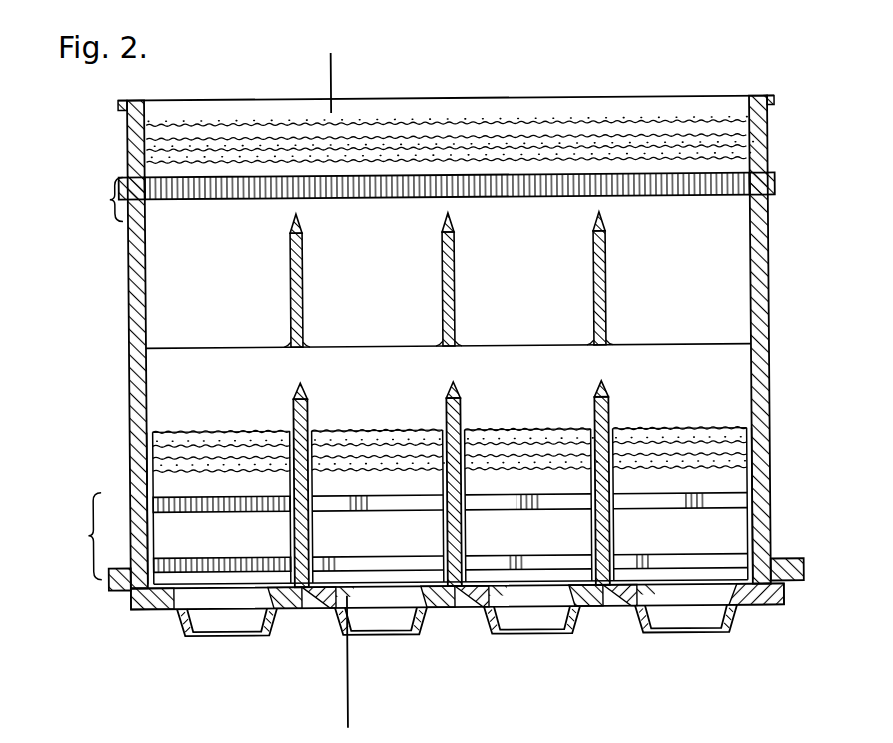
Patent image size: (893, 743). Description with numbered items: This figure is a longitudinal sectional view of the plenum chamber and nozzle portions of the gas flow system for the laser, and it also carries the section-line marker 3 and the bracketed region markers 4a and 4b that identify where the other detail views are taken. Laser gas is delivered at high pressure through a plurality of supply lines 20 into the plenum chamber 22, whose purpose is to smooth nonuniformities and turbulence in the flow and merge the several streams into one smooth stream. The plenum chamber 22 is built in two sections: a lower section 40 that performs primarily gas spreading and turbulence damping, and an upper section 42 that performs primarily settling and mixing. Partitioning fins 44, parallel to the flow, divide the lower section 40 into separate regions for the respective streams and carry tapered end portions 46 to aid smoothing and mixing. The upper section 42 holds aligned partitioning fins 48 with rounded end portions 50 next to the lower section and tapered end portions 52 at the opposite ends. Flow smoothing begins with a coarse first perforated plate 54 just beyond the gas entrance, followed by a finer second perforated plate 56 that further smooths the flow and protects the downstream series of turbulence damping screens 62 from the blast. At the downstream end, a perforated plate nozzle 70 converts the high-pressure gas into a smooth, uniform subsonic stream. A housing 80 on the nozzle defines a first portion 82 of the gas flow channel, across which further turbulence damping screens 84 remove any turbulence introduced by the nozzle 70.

The supply lines 20 is at (424, 634).
The plenum chamber 22 is at (426, 343).
The lower section 40 is at (393, 403).
The upper section 42 is at (387, 295).
The partitioning fins 44 is at (312, 550).
The tapered end portions 46 is at (294, 386).
The partitioning fins 48 is at (420, 277).
The rounded end portions 50 is at (291, 345).
The tapered end portions 52 is at (292, 218).
The first perforated plate 54 is at (217, 556).
The second perforated plate 56 is at (225, 498).
The turbulence damping screens 62 is at (661, 451).
The perforated plate nozzle 70 is at (745, 174).
The housing 80 is at (130, 126).
The first portion of gas flow channel 82 is at (471, 100).
The turbulence damping screens 84 is at (618, 146).
The section line 3- 3 is at (350, 708).
The section 4a is at (66, 537).
The section 4b is at (97, 200).